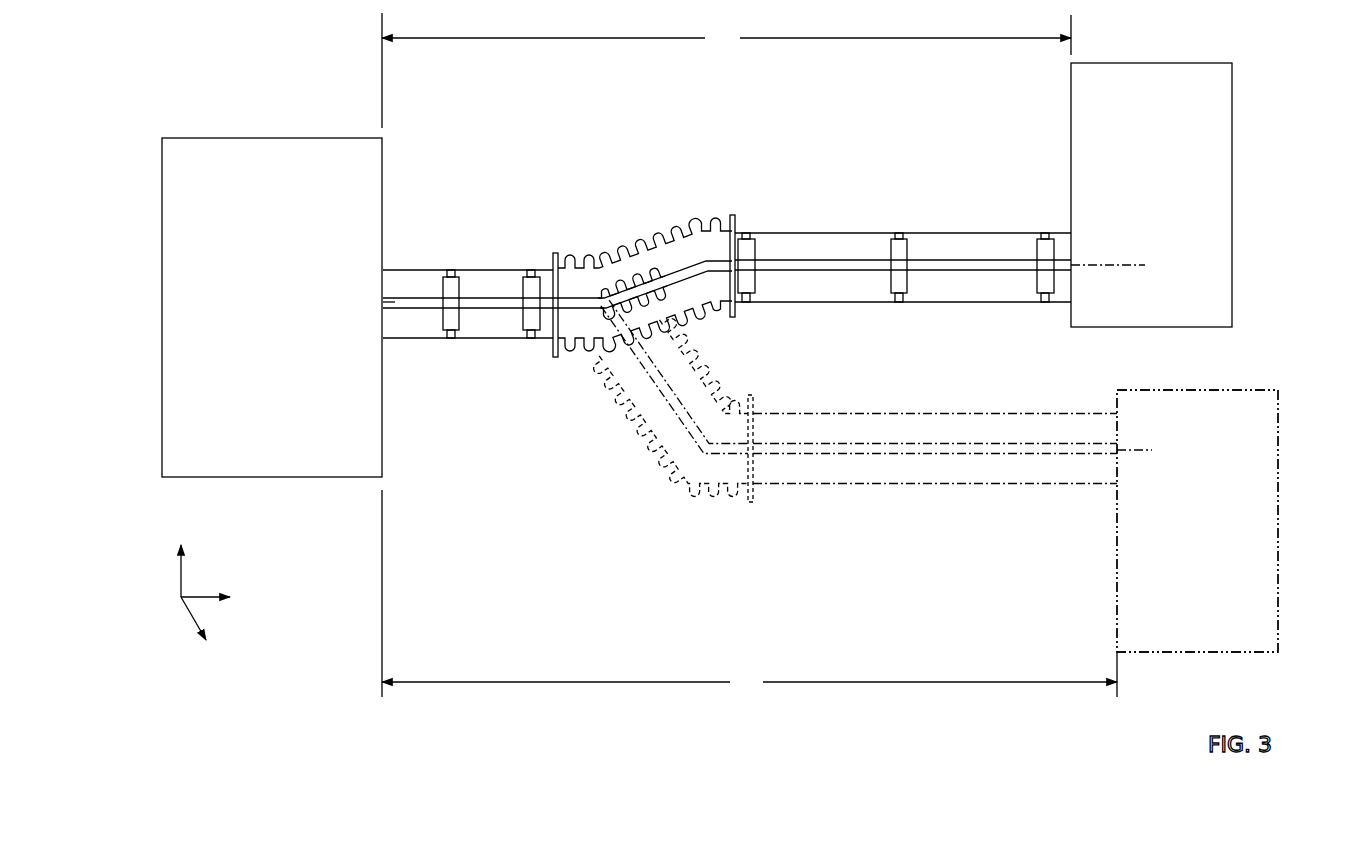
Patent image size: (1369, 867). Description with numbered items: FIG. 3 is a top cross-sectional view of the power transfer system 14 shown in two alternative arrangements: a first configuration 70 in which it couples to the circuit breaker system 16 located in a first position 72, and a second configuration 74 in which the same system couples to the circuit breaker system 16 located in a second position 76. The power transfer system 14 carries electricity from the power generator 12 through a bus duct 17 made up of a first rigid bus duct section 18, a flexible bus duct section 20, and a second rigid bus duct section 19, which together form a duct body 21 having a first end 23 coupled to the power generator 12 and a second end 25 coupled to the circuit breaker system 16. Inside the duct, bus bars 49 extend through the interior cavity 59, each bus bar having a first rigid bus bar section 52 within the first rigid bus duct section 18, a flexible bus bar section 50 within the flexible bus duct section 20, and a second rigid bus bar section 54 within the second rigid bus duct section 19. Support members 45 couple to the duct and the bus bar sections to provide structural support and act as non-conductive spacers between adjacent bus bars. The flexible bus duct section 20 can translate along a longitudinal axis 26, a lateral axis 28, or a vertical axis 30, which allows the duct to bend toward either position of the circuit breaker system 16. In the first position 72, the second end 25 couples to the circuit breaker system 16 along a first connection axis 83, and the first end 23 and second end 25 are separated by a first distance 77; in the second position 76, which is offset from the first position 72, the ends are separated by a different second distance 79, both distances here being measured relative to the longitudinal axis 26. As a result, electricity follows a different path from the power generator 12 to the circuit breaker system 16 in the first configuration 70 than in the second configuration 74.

The power generator 12 is at (273, 138).
The power transfer system 14 is at (678, 117).
The circuit breaker system 16 is at (1152, 63).
The bus duct 17 is at (753, 213).
The first rigid bus duct section 18 is at (437, 270).
The second rigid bus duct section 19 is at (870, 302).
The flexible bus duct section 20 is at (678, 228).
The duct body 21 is at (1005, 495).
The first end 23 is at (383, 302).
The second end 25 is at (1075, 240).
The longitudinal axis 26 is at (203, 597).
The lateral axis 28 is at (190, 617).
The vertical axis 30 is at (181, 575).
The support members 45 is at (459, 330).
The bus bars 49 is at (975, 270).
The flexible bus bar section 50 is at (642, 240).
The first rigid bus bar section 52 is at (487, 298).
The second rigid bus bar section 54 is at (818, 260).
The interior cavity 59 is at (810, 290).
The first configuration 70 is at (803, 170).
The first position 72 is at (1237, 82).
The second configuration 74 is at (645, 487).
The second position 76 is at (1288, 447).
The first distance 77 is at (726, 70).
The second distance 79 is at (749, 593).
The first connection axis 83 is at (1110, 265).